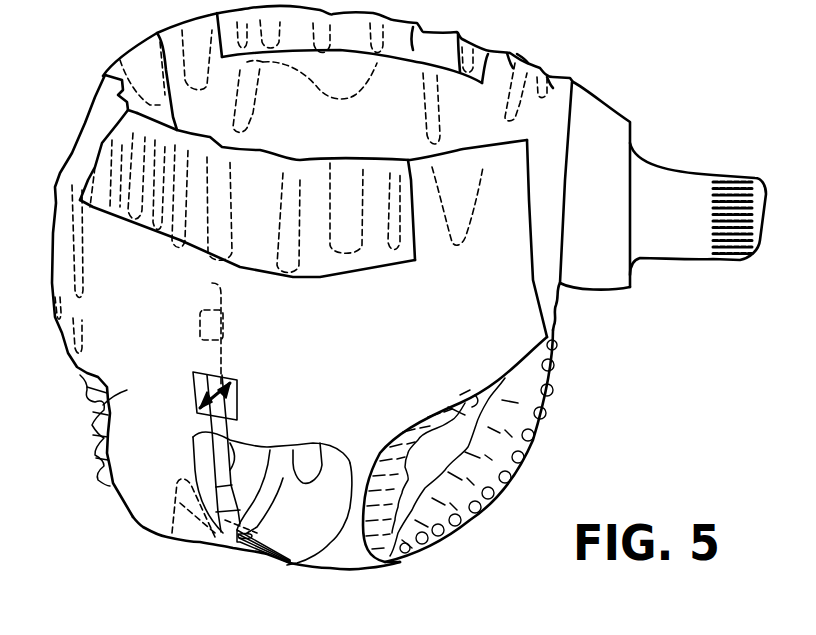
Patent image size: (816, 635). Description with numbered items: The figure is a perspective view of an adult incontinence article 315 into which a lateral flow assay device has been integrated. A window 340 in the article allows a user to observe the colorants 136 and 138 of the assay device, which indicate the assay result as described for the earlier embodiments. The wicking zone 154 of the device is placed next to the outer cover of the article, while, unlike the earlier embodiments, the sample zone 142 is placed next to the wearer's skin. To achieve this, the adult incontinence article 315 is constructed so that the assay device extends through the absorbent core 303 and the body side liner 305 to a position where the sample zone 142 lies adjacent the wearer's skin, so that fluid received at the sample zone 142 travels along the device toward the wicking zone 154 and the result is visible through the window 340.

The wicking zone 154 is at (212, 283).
The colorant 138 is at (214, 378).
The colorant 136 is at (222, 437).
The window 340 is at (240, 388).
The absorbent core 303 is at (243, 432).
The body side liner 305 is at (320, 443).
The sample zone 142 is at (258, 560).
The adult incontinence article 315 is at (90, 407).